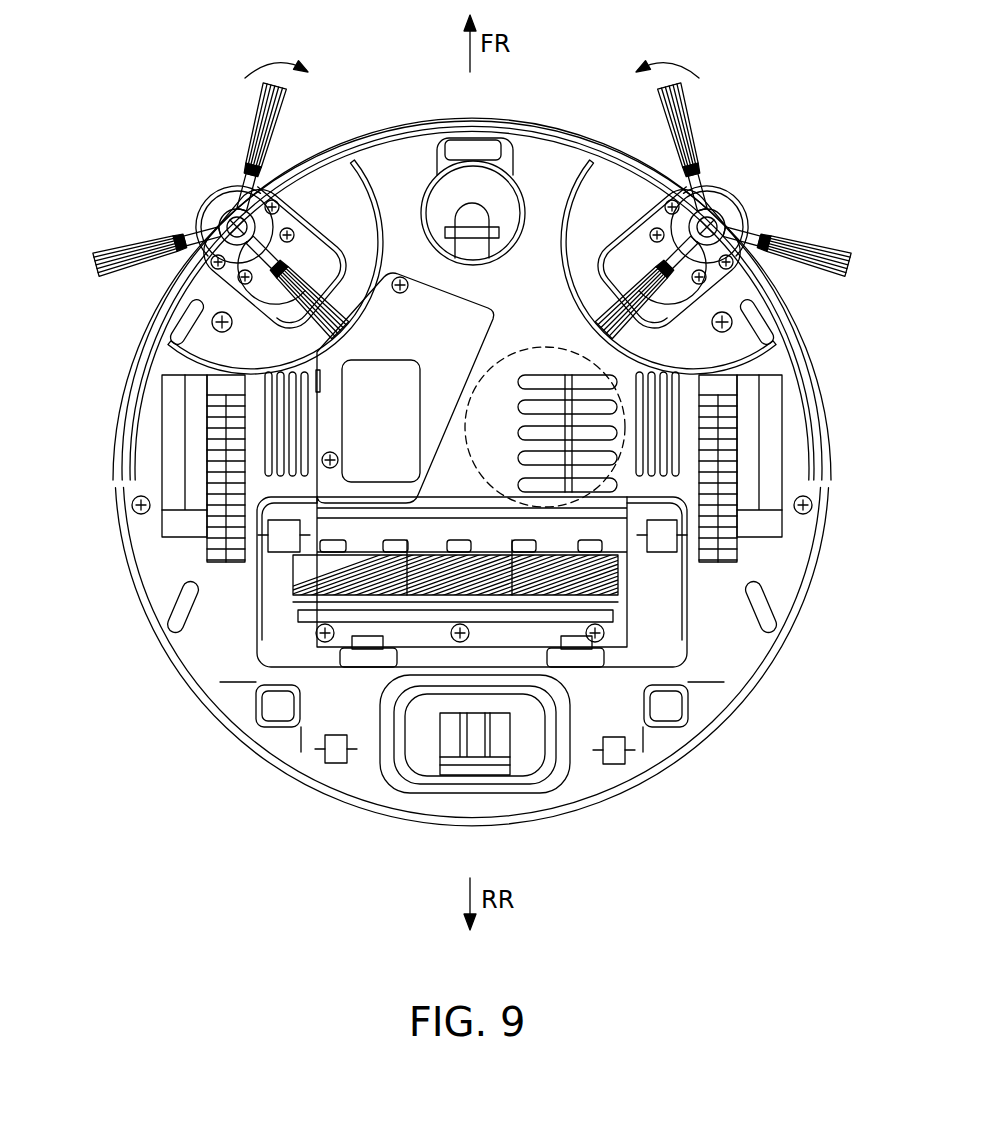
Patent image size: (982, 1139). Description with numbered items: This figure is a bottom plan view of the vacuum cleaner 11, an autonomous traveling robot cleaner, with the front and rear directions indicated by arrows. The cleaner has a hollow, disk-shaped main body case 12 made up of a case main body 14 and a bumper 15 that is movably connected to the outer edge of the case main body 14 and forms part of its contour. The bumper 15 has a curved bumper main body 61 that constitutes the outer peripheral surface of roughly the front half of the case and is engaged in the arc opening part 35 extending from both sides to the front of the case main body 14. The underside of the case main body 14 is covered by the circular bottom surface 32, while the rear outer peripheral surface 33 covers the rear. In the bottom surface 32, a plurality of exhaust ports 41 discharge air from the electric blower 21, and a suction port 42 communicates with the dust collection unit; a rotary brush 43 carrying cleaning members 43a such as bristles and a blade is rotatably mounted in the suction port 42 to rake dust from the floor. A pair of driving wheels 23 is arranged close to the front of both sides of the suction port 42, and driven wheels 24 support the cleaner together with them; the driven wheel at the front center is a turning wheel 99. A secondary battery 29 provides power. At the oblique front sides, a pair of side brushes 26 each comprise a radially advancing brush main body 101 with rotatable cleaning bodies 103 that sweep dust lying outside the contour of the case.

The vacuum cleaner 11 is at (585, 64).
The main body case 12 is at (472, 271).
The case main body 14 is at (377, 156).
The bumper 15 is at (400, 115).
The bumper main body 61 is at (430, 115).
The arc opening part 35 is at (597, 152).
The side brushes 26 is at (472, 215).
The brush main body 101 is at (207, 202).
The cleaning bodies 103 is at (262, 139).
The turning wheel 99 is at (480, 253).
The secondary battery 29 is at (402, 272).
The electric blower 21 is at (545, 406).
The exhaust ports 41 is at (583, 383).
The driving wheels 23 is at (212, 425).
The bottom surface 32 is at (508, 680).
The rotary brush 43 is at (508, 702).
The cleaning members 43a is at (492, 585).
The suction port 42 is at (450, 602).
The rear outer peripheral surface 33 is at (540, 795).
The driven wheels 24 is at (337, 765).